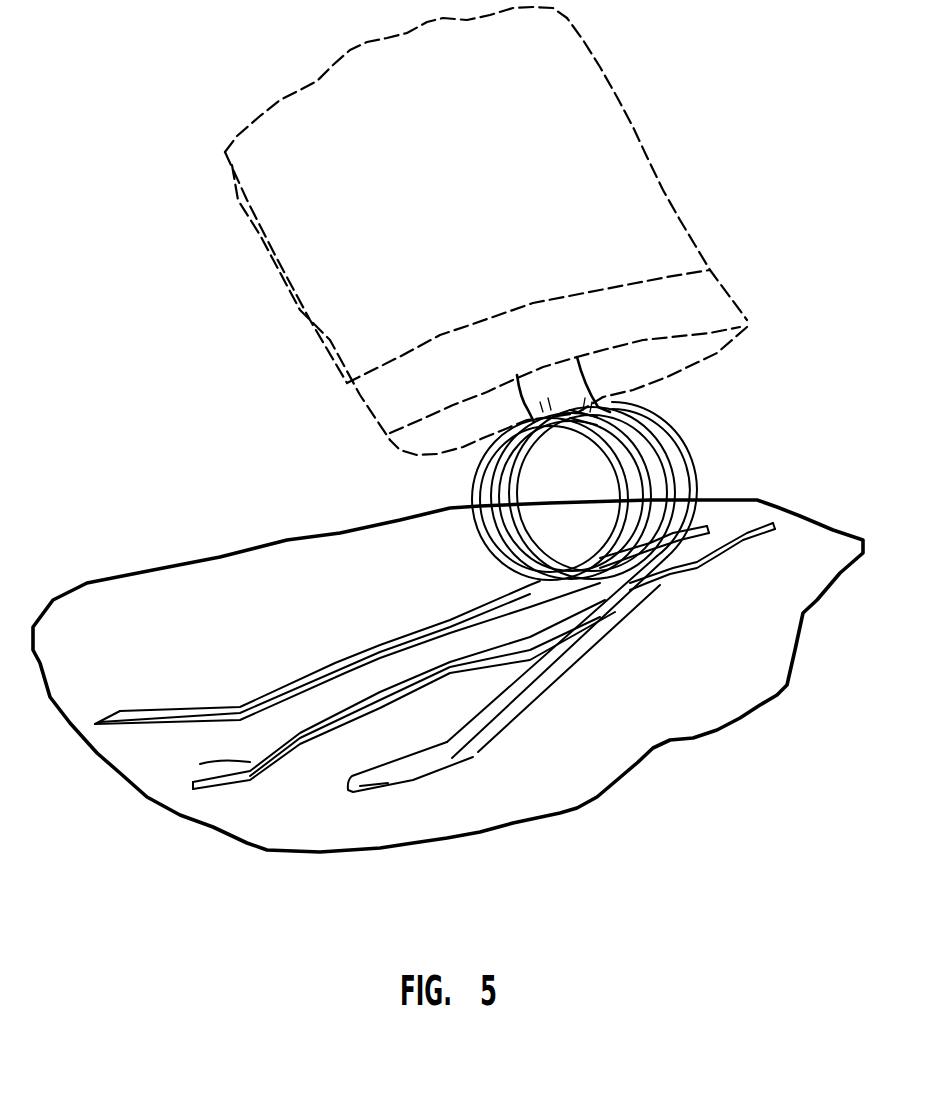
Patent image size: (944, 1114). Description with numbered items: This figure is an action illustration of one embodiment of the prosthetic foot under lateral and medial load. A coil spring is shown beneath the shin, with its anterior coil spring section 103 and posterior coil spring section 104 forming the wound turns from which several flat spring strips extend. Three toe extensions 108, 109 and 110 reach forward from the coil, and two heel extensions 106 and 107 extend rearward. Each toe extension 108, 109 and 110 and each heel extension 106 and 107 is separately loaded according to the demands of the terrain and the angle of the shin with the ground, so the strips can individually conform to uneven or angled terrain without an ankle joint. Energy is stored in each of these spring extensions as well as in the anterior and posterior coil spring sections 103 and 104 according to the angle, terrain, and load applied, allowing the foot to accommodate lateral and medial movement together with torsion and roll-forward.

The anterior coil spring section 103 is at (475, 505).
The posterior coil spring section 104 is at (683, 443).
The heel extension 106 is at (747, 533).
The heel extension 107 is at (700, 527).
The toe extension 108 is at (297, 683).
The toe extension 109 is at (200, 764).
The toe extension 110 is at (350, 786).